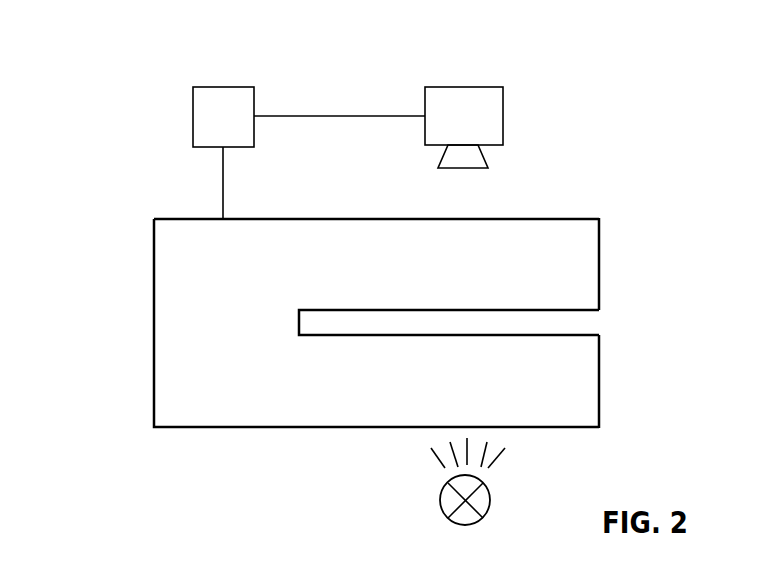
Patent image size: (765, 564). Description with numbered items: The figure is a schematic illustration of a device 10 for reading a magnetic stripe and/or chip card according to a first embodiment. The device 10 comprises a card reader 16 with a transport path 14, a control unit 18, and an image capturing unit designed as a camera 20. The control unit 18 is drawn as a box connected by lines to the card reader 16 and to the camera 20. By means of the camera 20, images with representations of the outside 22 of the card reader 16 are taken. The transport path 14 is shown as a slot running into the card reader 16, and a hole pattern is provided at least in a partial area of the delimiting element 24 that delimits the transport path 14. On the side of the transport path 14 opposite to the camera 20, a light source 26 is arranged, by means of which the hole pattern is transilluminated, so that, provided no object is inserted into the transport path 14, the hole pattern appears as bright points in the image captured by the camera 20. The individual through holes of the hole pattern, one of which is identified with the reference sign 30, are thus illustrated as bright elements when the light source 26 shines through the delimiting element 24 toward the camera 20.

The device 10 is at (114, 96).
The transport path 14 is at (580, 322).
The card reader 16 is at (210, 415).
The control unit 18 is at (219, 99).
The camera 20 is at (455, 99).
The outside 22 is at (551, 218).
The delimiting element 24 is at (588, 267).
The light source 26 is at (447, 501).
The through hole 30 is at (496, 563).